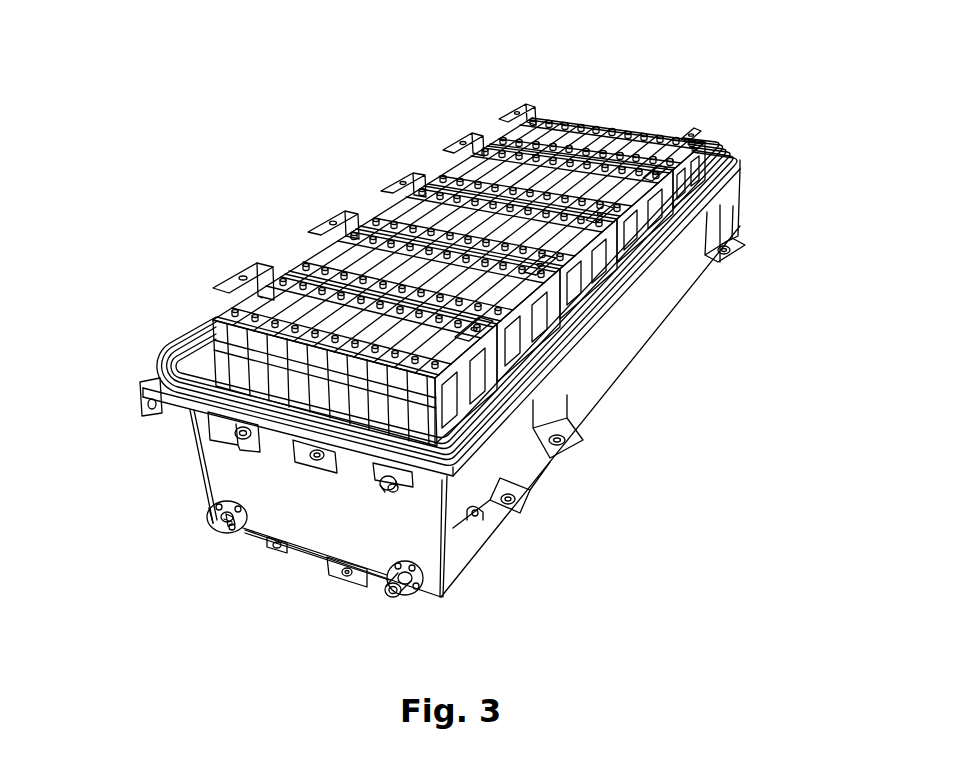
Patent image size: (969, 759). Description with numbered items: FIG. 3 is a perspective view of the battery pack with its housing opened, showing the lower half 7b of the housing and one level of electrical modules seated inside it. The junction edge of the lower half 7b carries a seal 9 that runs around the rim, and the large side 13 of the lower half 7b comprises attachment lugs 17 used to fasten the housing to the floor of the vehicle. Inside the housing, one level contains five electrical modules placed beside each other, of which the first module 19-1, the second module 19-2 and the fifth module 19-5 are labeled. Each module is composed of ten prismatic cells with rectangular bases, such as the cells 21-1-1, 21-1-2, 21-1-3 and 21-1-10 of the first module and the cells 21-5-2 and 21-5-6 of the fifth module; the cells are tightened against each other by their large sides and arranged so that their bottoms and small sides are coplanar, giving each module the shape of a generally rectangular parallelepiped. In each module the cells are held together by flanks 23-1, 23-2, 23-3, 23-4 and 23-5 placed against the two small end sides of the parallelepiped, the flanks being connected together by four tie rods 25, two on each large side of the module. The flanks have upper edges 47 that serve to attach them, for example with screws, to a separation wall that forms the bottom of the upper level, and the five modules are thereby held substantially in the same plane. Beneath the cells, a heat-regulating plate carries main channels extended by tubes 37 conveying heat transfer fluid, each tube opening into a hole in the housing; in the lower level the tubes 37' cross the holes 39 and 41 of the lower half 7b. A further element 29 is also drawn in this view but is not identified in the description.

The seal 9 is at (731, 158).
The large side of the lower half 13 is at (470, 547).
The attachment lugs 17 is at (550, 462).
The electrical module 19-1 is at (240, 252).
The electrical module 19-2 is at (337, 198).
The electrical module 19-5 is at (507, 84).
The prismatic cell 21-1-1 is at (232, 303).
The prismatic cell 21-1-2 is at (300, 382).
The prismatic cell 21-1-3 is at (405, 330).
The prismatic cell 21-1-10 is at (418, 405).
The prismatic cell 21-5-2 is at (553, 118).
The prismatic cell 21-5-6 is at (610, 122).
The flank 23-1 is at (485, 394).
The flank 23-2 is at (533, 345).
The flank 23-3 is at (590, 288).
The flank 23-4 is at (660, 228).
The flank 23-5 is at (690, 178).
The tie rods 25 is at (445, 415).
The mounting lug 29 is at (467, 410).
The tubes 37 is at (341, 549).
The tubes 37' is at (264, 583).
The hole 39 is at (423, 593).
The hole 41 is at (236, 527).
The lower half 7b is at (305, 518).
The upper edges 47 is at (278, 280).